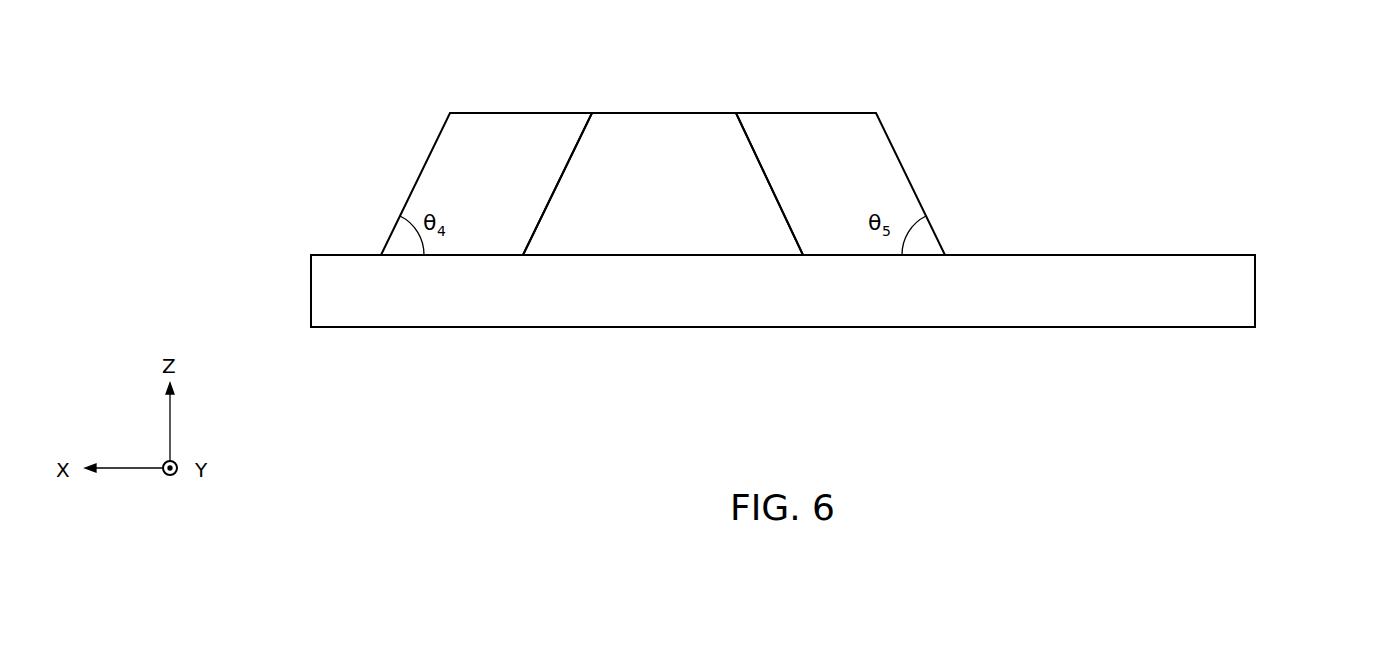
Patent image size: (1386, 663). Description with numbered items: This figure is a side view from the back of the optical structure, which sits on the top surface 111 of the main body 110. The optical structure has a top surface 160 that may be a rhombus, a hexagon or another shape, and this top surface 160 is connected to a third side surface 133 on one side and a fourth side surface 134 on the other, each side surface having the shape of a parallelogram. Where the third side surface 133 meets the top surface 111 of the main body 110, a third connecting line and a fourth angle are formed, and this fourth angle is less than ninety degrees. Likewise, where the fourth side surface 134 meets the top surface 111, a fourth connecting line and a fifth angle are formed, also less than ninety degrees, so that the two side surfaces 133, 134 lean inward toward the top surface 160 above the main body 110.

The main body 110 is at (1240, 290).
The top surface of the main body 111 is at (1222, 254).
The third side surface 133 is at (515, 193).
The fourth side surface 134 is at (864, 193).
The top surface of the optical structure 160 is at (667, 112).